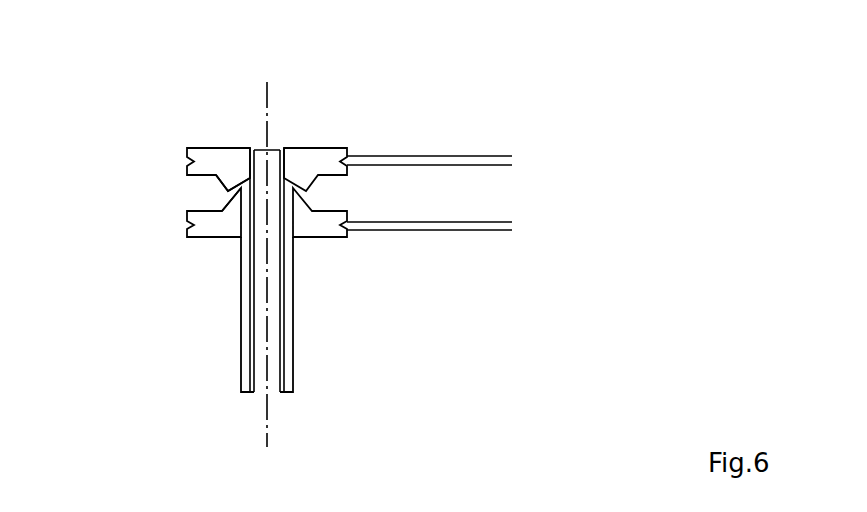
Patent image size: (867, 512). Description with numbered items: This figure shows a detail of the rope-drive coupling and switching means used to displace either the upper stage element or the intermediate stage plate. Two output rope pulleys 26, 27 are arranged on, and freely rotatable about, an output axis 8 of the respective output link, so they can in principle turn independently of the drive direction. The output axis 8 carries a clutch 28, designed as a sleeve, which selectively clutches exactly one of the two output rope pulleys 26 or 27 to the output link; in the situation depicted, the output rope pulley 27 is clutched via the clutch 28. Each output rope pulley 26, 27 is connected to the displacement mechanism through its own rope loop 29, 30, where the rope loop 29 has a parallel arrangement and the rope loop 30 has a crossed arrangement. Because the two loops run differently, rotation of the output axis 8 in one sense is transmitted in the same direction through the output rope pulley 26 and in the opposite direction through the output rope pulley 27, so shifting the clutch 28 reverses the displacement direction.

The output axis 8 is at (266, 156).
The output rope pulley 26 is at (304, 160).
The output rope pulley 27 is at (313, 229).
The clutch 28 is at (237, 201).
The rope loop 29 is at (412, 162).
The rope loop 30 is at (413, 226).